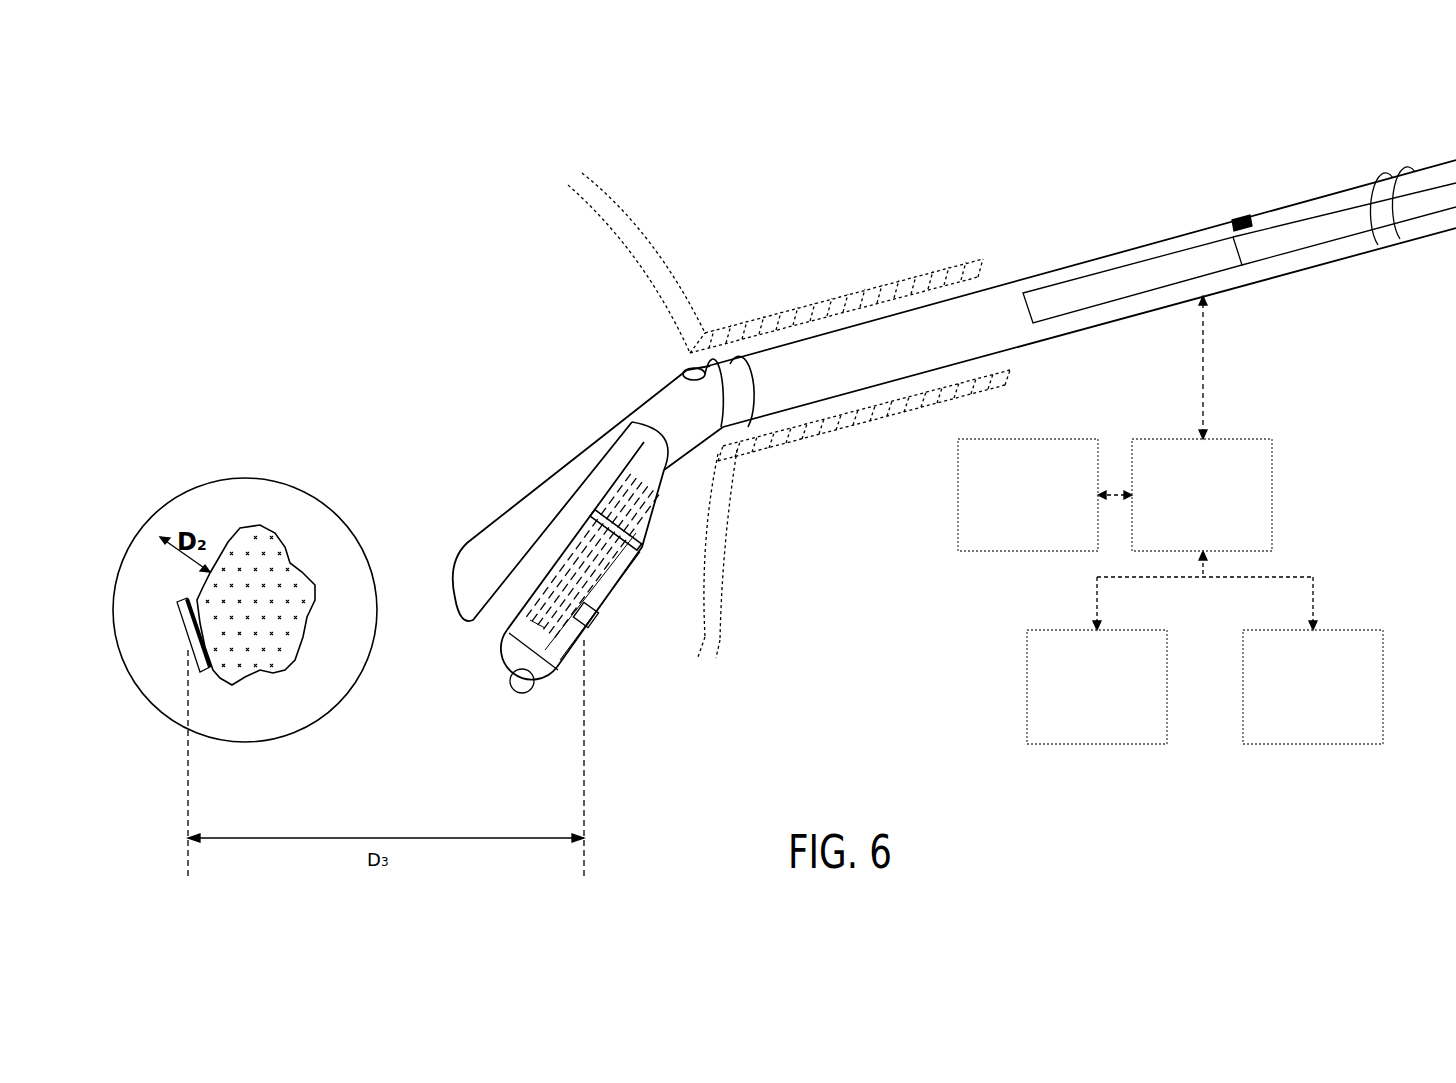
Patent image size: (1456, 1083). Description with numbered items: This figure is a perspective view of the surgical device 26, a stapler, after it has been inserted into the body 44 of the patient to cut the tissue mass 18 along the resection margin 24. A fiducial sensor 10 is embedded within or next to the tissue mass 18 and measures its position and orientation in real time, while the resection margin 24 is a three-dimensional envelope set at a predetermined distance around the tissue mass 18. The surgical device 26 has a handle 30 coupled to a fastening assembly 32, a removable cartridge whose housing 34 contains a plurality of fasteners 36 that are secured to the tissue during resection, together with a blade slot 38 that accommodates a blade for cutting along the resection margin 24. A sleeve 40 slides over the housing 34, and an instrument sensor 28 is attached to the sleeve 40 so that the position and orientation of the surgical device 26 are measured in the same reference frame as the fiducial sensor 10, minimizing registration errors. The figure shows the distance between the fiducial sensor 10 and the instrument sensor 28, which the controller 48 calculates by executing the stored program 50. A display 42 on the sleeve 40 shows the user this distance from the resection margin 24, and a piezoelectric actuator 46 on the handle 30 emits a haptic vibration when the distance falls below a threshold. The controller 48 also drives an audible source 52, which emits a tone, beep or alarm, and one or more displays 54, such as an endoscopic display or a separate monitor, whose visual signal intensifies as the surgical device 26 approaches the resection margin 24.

The fiducial sensor 10 is at (182, 617).
The tissue mass 18 is at (243, 678).
The resection margin 24 is at (363, 667).
The surgical device 26 is at (954, 400).
The instrument sensor 28 is at (590, 624).
The handle 30 is at (1237, 287).
The fastening assembly 32 is at (637, 522).
The housing 34 is at (683, 473).
The fasteners 36 is at (555, 575).
The blade slot 38 is at (540, 624).
The sleeve 40 is at (632, 567).
The display 42 is at (1160, 253).
The body 44 is at (737, 553).
The piezoelectric actuator 46 is at (1240, 218).
The controller 48 is at (1272, 495).
The stored program 50 is at (958, 495).
The audible source 52 is at (1383, 687).
The displays 54 is at (1027, 687).